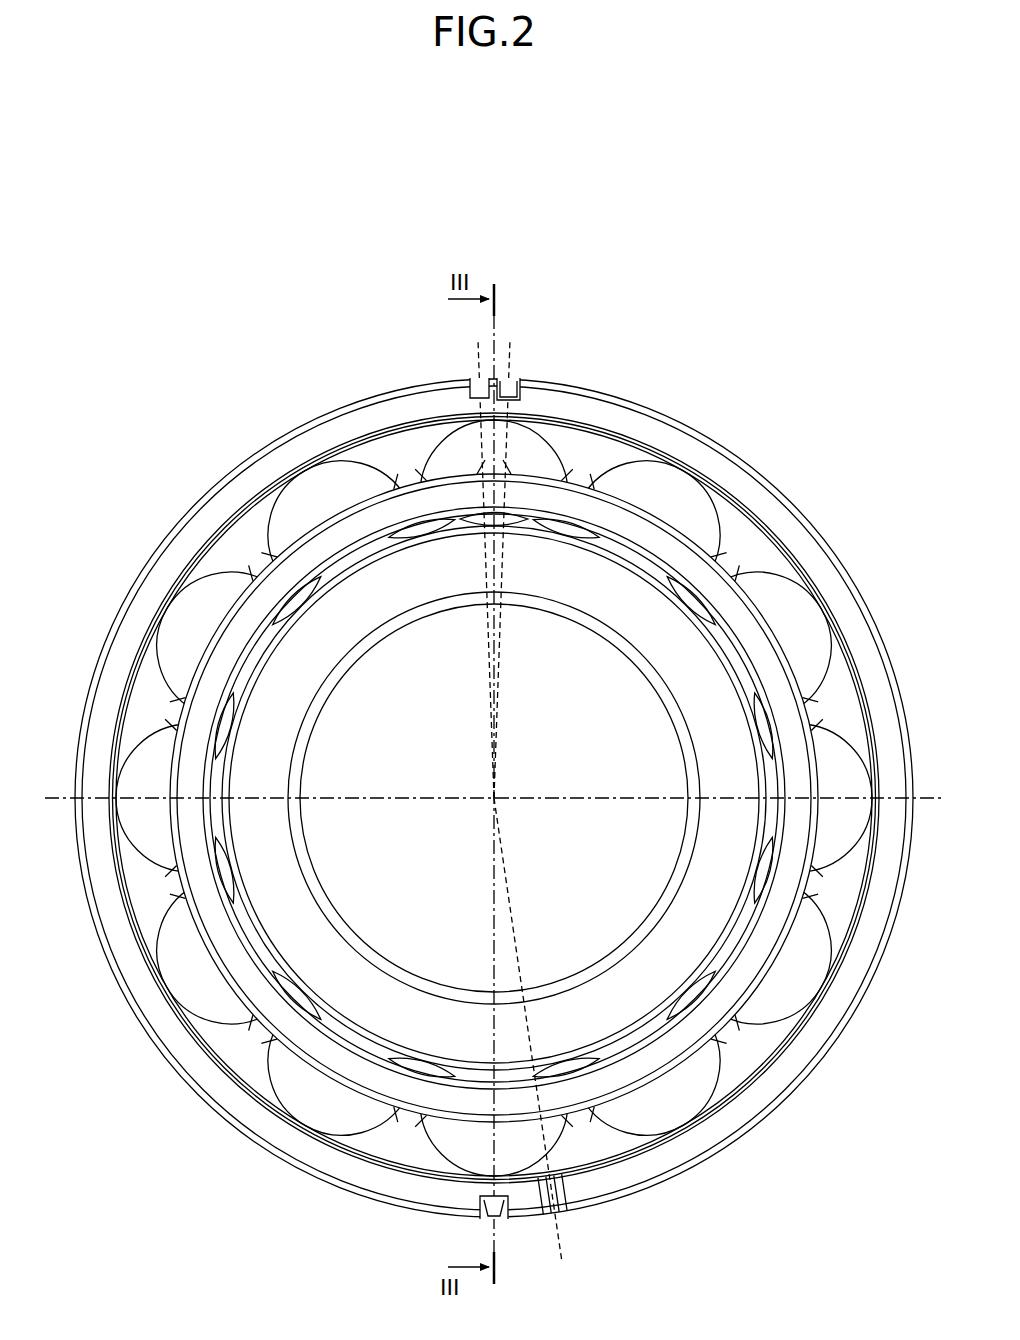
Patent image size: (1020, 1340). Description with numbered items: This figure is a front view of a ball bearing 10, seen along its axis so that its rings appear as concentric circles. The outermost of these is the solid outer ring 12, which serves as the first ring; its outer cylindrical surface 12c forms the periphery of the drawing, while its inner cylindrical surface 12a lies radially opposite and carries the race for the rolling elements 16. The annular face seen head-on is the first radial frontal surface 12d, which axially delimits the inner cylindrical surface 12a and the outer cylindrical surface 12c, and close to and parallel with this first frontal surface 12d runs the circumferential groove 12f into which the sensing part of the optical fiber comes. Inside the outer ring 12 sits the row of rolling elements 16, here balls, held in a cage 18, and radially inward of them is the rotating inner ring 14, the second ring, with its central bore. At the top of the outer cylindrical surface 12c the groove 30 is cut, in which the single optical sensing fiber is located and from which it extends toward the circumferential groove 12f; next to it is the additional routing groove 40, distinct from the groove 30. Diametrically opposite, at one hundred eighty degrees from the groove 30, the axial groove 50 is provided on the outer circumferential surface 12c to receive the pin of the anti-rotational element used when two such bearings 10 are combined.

The bearing 10 is at (781, 328).
The outer ring 12 is at (770, 470).
The inner cylindrical surface 12a is at (597, 436).
The outer cylindrical surface 12c is at (631, 404).
The first frontal surface 12d is at (318, 440).
The circumferential groove 12f is at (382, 402).
The inner ring 14 is at (640, 985).
The rolling elements 16 is at (806, 624).
The cage 18 is at (787, 893).
The groove 30 is at (470, 379).
The additional routing groove 40 is at (512, 378).
The axial groove 50 is at (558, 1198).